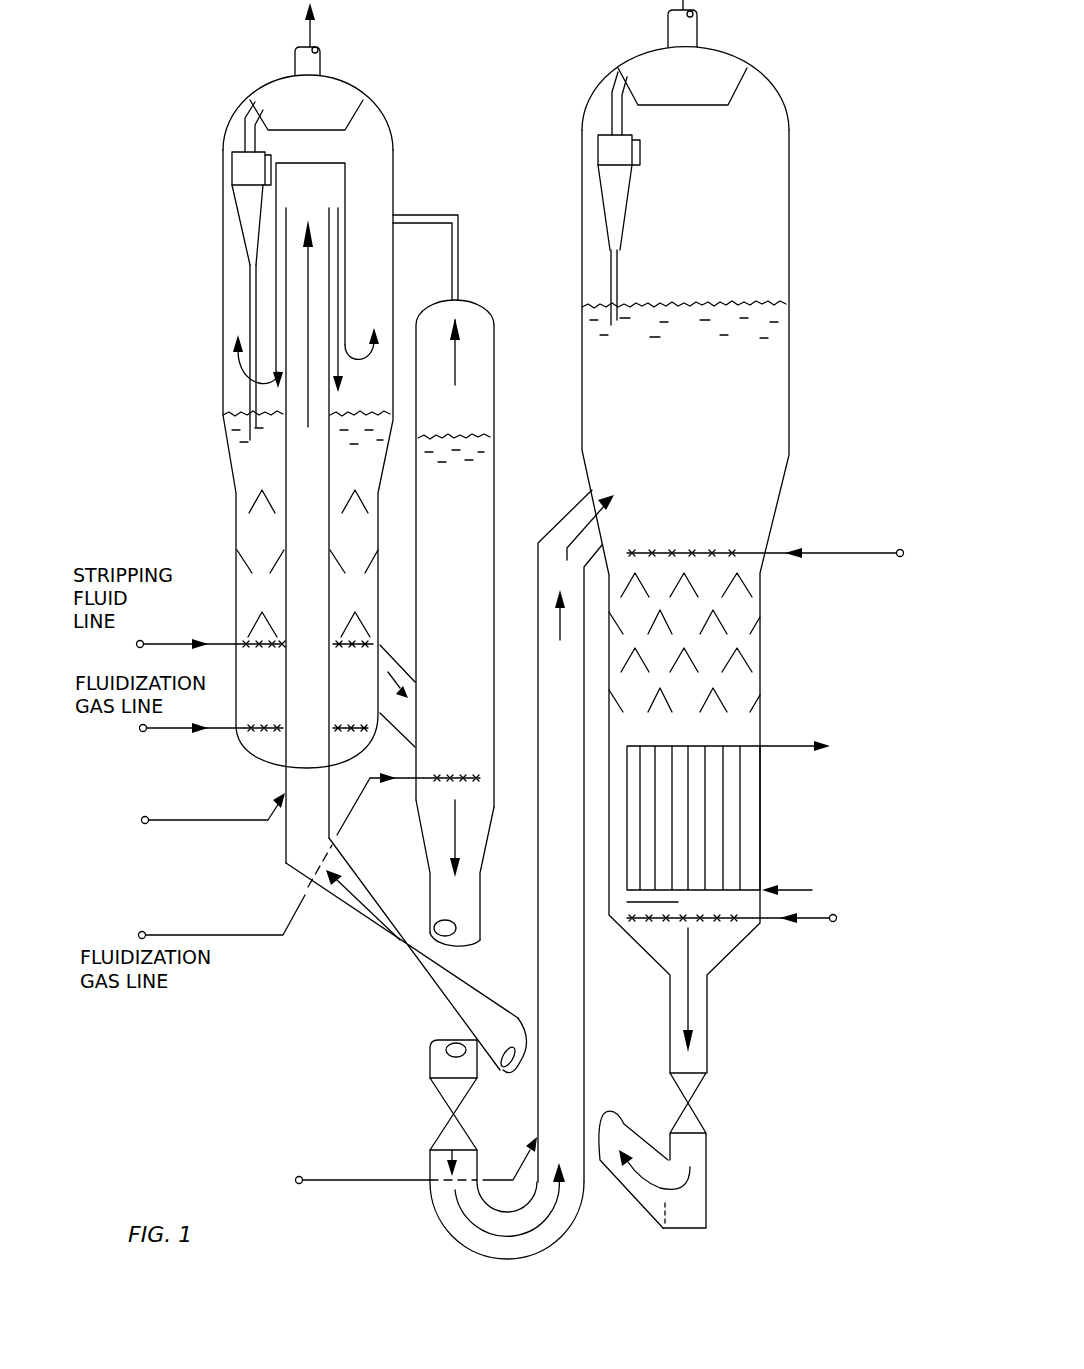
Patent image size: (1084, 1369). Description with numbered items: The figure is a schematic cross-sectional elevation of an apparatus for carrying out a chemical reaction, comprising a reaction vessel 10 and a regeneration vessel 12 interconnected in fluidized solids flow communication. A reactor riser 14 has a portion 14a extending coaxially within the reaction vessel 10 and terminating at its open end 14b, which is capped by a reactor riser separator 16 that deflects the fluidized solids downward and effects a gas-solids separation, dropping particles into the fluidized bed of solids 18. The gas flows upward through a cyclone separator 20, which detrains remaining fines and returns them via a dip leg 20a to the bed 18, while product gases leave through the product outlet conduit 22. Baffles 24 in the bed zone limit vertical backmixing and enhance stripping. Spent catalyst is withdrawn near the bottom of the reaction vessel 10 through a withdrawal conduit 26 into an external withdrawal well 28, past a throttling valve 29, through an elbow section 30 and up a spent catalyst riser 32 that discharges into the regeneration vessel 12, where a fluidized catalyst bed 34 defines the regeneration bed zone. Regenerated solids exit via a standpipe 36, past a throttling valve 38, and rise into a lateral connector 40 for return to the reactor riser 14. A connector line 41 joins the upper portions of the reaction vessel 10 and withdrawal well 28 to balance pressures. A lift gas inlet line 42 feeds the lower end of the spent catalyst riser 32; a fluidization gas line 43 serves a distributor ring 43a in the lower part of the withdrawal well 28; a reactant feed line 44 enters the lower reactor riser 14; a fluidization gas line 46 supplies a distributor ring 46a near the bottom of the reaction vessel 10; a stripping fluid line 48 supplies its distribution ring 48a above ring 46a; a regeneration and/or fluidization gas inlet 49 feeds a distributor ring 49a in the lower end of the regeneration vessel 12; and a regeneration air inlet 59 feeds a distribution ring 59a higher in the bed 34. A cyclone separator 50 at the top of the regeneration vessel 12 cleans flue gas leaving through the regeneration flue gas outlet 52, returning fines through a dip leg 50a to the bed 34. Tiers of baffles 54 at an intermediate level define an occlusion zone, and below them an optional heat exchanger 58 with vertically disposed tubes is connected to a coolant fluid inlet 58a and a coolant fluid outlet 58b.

The reaction vessel 10 is at (205, 412).
The regeneration vessel 12 is at (560, 314).
The reactor riser 14 is at (300, 778).
The portion of reactor riser 14a is at (300, 456).
The open end of reactor riser 14b is at (322, 205).
The reactor riser separator 16 is at (345, 180).
The fluidized bed of solids 18 is at (250, 462).
The cyclone separator 20 is at (248, 198).
The dip leg 20a is at (248, 300).
The product outlet conduit 22 is at (320, 60).
The baffles 24 is at (358, 503).
The withdrawal conduit 26 is at (398, 668).
The external withdrawal well 28 is at (496, 496).
The throttling valve 29 is at (440, 1116).
The elbow section 30 is at (545, 1230).
The spent catalyst riser 32 is at (548, 877).
The fluidized catalyst bed 34 is at (700, 447).
The standpipe 36 is at (700, 1044).
The throttling valve 38 is at (692, 1100).
The lateral connector 40 is at (392, 950).
The connector line 41 is at (458, 255).
The lift gas inlet line 42 is at (330, 1185).
The fluidization gas line 43 is at (408, 776).
The distributor ring 43a is at (465, 772).
The reactant feed line 44 is at (207, 828).
The fluidization gas line 46 is at (182, 733).
The distributor ring 46a is at (352, 722).
The stripping fluid line 48 is at (218, 646).
The distribution ring 48a is at (262, 648).
The regeneration and/or fluidization gas inlet 49 is at (800, 918).
The distributor ring 49a is at (700, 922).
The cyclone separator 50 is at (622, 190).
The dip leg 50a is at (620, 288).
The regeneration flue gas outlet 52 is at (695, 28).
The baffles 54 is at (748, 635).
The heat exchanger 58 is at (708, 823).
The coolant fluid inlet 58a is at (794, 890).
The coolant fluid outlet 58b is at (782, 752).
The regeneration air inlet 59 is at (836, 553).
The distribution ring 59a is at (715, 510).